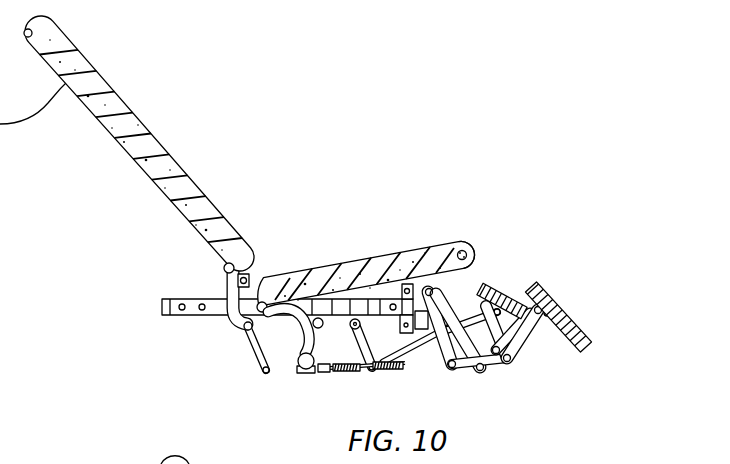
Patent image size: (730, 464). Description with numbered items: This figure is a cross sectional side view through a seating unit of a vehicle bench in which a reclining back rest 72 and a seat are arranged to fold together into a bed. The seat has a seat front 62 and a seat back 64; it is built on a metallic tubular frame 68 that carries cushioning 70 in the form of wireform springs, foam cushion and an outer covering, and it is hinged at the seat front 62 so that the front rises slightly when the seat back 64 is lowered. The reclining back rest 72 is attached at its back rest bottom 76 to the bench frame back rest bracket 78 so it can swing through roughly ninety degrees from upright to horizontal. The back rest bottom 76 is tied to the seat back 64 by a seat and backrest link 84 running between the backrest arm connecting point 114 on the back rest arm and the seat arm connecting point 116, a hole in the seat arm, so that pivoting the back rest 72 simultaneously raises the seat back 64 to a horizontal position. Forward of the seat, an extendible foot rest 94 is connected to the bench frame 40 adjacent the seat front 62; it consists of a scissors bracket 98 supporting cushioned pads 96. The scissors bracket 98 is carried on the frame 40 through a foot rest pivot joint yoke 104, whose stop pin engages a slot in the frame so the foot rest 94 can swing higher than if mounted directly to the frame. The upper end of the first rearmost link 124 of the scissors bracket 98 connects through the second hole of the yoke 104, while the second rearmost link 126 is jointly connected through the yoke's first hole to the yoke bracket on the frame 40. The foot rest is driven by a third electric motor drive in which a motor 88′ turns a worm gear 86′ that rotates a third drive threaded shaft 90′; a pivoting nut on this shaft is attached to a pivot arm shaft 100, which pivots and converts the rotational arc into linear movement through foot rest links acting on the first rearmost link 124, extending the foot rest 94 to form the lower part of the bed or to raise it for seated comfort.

The bench frame 40 is at (160, 308).
The seat front 62 is at (469, 249).
The seat back 64 is at (264, 277).
The metallic tubular frame 68 is at (462, 250).
The cushioning 70 is at (340, 270).
The reclining back rest 72 is at (163, 114).
The back rest bottom 76 is at (214, 253).
The bench frame back rest bracket 78 is at (262, 264).
The seat and backrest link 84 is at (250, 340).
The worm gear 86′ is at (308, 374).
The motor 88′ is at (282, 372).
The third drive threaded shaft 90′ is at (385, 367).
The extendible foot rest 94 is at (604, 302).
The cushioned pad 96 is at (512, 289).
The scissors bracket 98 is at (527, 332).
The pivot arm shaft 100 is at (345, 350).
The foot rest pivot joint yoke 104 is at (450, 307).
The backrest arm connecting point 114 is at (245, 327).
The seat arm connecting point 116 is at (253, 360).
The first rearmost link 124 is at (437, 364).
The second rearmost link 126 is at (489, 369).